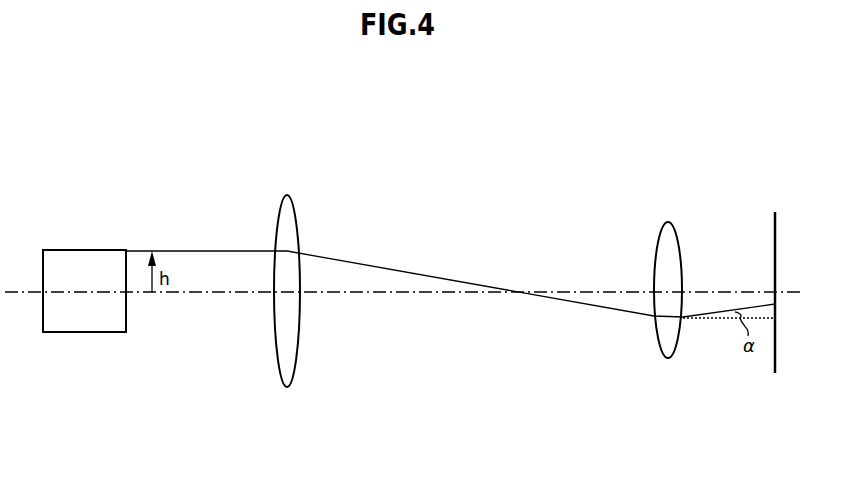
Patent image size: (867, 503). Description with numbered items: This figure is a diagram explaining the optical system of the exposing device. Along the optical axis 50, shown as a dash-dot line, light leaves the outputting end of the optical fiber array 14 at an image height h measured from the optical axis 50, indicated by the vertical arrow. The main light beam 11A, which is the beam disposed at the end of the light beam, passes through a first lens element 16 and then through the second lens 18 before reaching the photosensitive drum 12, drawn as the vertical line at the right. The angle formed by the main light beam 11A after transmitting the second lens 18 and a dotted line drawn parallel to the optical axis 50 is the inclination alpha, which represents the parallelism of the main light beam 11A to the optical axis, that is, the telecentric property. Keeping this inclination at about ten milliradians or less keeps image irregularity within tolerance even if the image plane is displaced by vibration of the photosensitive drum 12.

The optical fiber array 14 is at (93, 250).
The first lens 16 is at (299, 229).
The main light beam 11A is at (441, 275).
The optical axis 50 is at (403, 294).
The second lens 18 is at (668, 222).
The photosensitive drum 12 is at (774, 248).